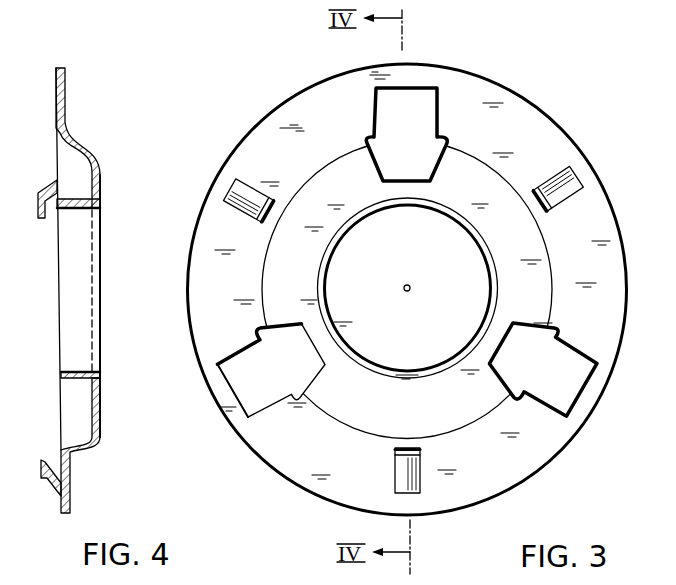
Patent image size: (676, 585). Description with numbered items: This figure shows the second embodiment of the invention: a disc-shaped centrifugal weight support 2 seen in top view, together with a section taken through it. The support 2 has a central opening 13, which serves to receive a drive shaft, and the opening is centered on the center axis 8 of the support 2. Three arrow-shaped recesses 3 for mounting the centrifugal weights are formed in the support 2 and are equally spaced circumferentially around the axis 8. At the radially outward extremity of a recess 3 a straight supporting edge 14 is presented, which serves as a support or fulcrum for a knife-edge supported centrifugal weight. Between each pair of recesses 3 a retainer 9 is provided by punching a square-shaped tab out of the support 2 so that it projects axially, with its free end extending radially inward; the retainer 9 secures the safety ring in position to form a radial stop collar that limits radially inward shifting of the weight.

In FIG. 3, the centrifugal weight support 2 is at (540, 130).
In FIG. 4, the centrifugal weight support 2 is at (66, 78).
In FIG. 3, the recess 3 is at (423, 94).
In FIG. 4, the recess 3 is at (64, 110).
In FIG. 3, the center axis 8 is at (410, 286).
In FIG. 3, the retainer 9 is at (566, 186).
In FIG. 4, the retainer 9 is at (44, 478).
In FIG. 3, the opening 13 is at (386, 374).
In FIG. 3, the supporting edge 14 is at (245, 398).